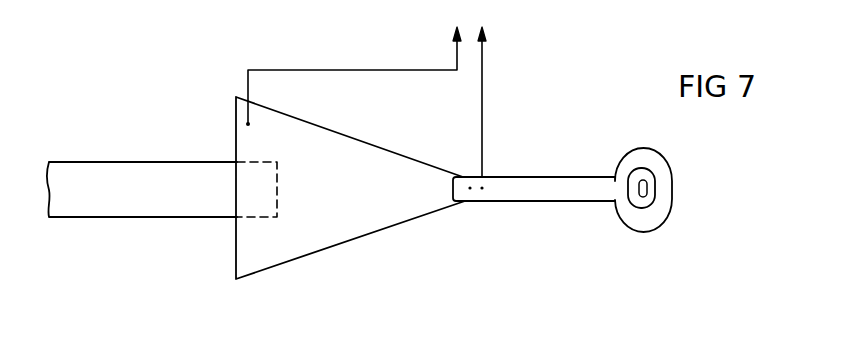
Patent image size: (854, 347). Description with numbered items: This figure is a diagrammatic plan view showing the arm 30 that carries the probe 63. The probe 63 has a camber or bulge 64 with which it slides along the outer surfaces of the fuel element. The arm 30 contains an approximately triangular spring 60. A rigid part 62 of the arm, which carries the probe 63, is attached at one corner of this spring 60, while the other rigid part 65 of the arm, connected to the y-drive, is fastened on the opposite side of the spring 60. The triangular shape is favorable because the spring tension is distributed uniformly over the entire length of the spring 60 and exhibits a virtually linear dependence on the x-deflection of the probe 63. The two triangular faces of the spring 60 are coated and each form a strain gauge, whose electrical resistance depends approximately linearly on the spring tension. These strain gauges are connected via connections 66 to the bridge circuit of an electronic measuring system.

The arm 30 is at (208, 135).
The triangular spring 60 is at (368, 219).
The rigid part 62 is at (555, 192).
The probe 63 is at (653, 217).
The camber 64 is at (650, 186).
The rigid part 65 is at (138, 202).
The connections 66 is at (457, 57).